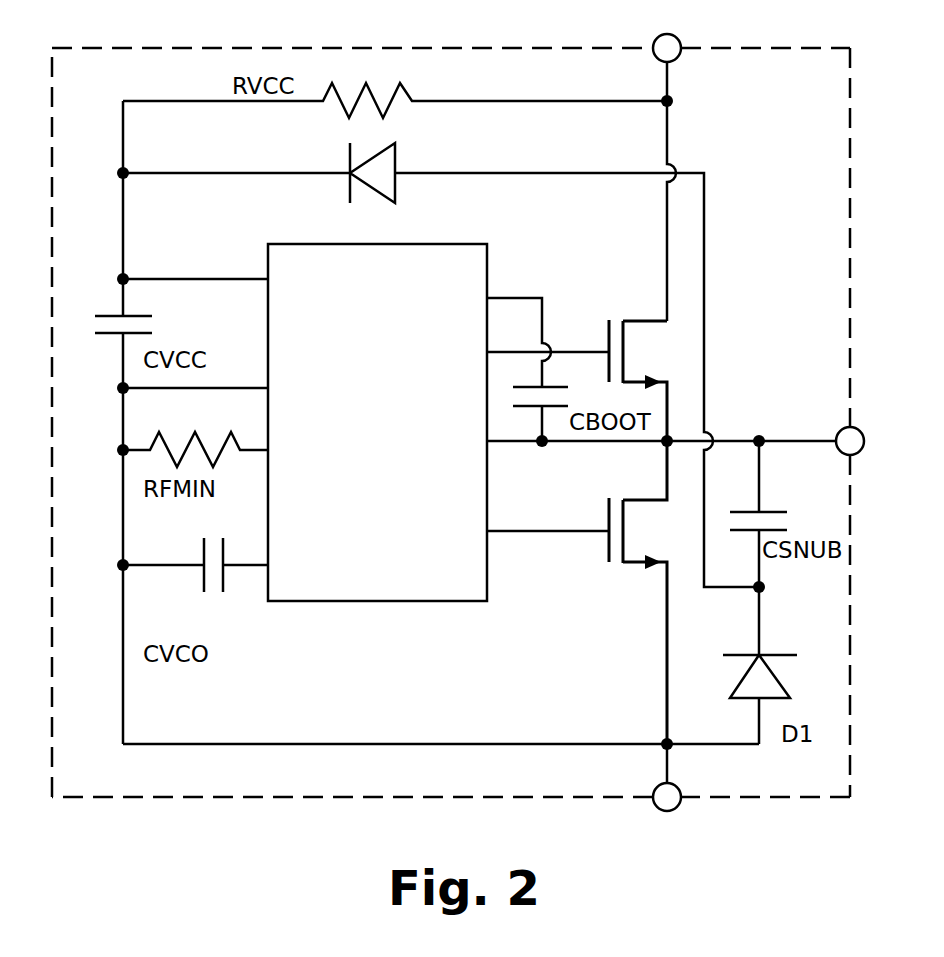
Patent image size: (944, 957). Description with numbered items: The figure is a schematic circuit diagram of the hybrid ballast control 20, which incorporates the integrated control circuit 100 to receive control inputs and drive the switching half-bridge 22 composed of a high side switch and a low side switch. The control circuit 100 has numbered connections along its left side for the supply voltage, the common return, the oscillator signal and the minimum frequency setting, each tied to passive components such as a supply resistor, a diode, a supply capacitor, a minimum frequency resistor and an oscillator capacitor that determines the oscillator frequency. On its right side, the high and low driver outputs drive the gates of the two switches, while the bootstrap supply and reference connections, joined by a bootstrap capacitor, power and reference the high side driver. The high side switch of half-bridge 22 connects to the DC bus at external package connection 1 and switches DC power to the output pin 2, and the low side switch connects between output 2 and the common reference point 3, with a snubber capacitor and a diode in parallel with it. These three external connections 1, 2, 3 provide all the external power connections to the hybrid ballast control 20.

The external package connection 1 is at (667, 161).
The hybrid ballast control output pin 2 is at (865, 441).
The common reference point 3 is at (667, 798).
The hybrid ballast control 20 is at (451, 422).
The half-bridge 22 is at (587, 307).
The integrated control circuit 100 is at (393, 601).